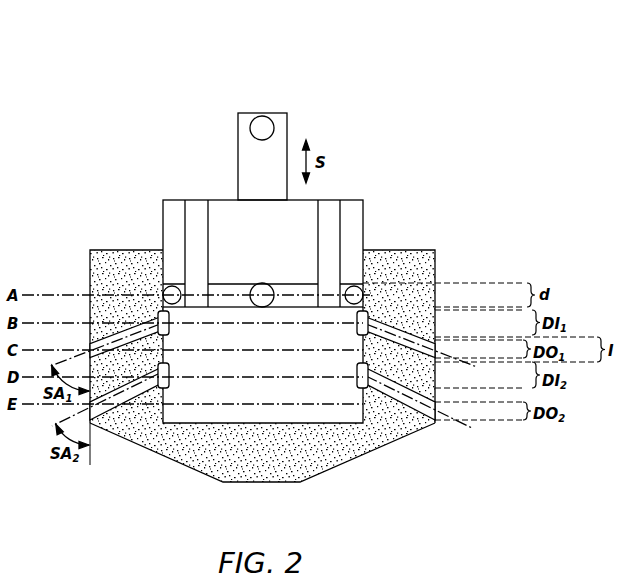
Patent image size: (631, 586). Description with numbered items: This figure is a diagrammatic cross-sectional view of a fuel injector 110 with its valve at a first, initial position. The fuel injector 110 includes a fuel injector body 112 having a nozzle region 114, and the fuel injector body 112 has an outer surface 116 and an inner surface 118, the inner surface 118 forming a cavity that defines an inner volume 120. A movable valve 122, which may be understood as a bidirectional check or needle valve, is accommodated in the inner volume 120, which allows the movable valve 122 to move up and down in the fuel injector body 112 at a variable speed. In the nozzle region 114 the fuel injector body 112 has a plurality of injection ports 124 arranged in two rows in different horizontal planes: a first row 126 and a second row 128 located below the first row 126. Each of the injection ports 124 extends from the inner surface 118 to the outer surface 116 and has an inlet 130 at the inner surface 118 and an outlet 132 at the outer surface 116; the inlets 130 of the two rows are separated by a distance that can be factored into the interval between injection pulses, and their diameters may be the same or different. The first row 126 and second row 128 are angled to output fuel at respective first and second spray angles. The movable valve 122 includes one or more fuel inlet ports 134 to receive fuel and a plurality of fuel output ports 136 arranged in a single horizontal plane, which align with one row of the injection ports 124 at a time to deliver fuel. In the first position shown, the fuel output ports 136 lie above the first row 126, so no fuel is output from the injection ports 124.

The fuel injector 110 is at (430, 72).
The fuel injector body 112 is at (415, 243).
The nozzle region 114 is at (310, 490).
The outer surface 116 is at (437, 263).
The inner surface 118 is at (353, 287).
The inner volume 120 is at (268, 370).
The movable valve 122 is at (350, 199).
The injection ports 124 is at (108, 354).
The first row 126 is at (162, 258).
The second row 128 is at (149, 410).
The inlet 130 is at (362, 331).
The outlet 132 is at (433, 348).
The fuel inlet ports 134 is at (262, 117).
The fuel output ports 136 is at (351, 288).